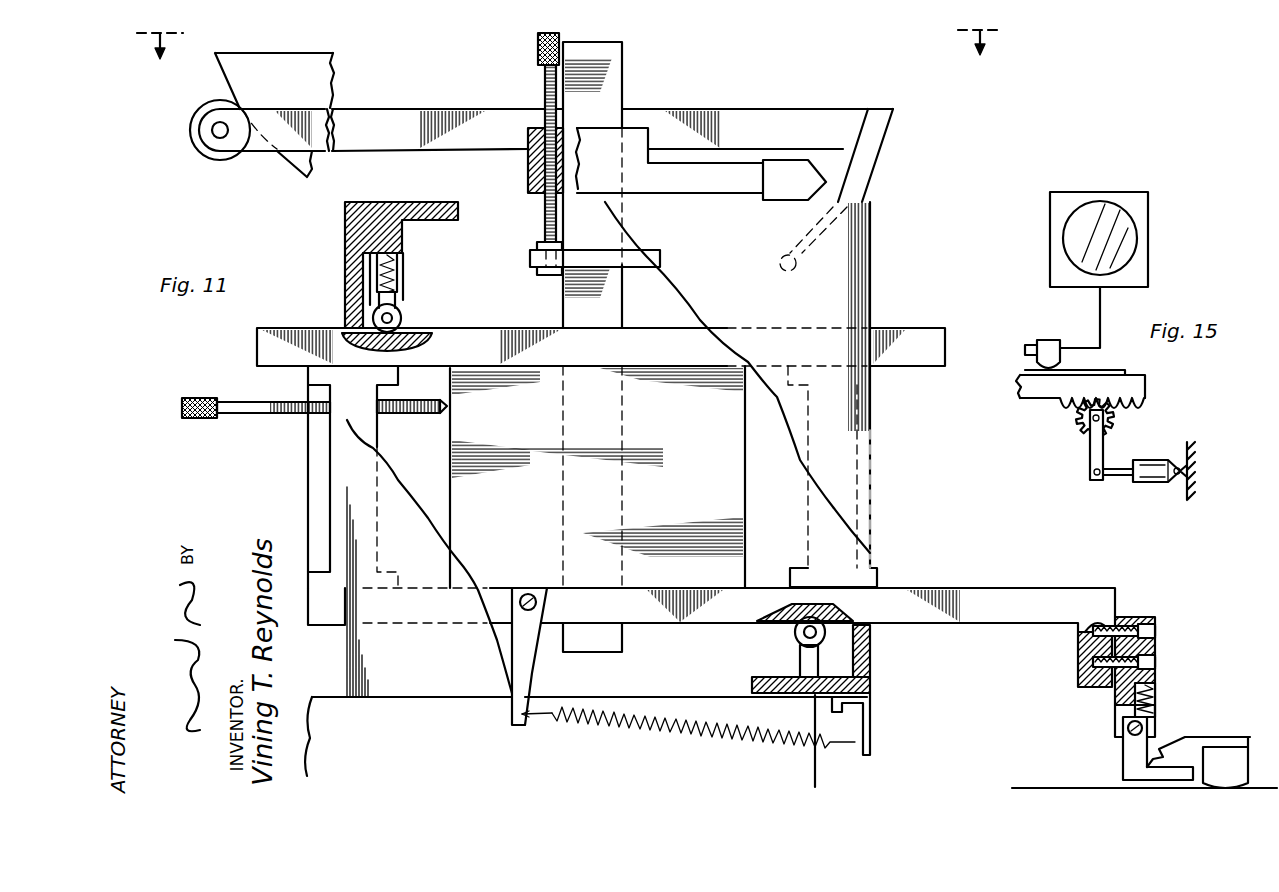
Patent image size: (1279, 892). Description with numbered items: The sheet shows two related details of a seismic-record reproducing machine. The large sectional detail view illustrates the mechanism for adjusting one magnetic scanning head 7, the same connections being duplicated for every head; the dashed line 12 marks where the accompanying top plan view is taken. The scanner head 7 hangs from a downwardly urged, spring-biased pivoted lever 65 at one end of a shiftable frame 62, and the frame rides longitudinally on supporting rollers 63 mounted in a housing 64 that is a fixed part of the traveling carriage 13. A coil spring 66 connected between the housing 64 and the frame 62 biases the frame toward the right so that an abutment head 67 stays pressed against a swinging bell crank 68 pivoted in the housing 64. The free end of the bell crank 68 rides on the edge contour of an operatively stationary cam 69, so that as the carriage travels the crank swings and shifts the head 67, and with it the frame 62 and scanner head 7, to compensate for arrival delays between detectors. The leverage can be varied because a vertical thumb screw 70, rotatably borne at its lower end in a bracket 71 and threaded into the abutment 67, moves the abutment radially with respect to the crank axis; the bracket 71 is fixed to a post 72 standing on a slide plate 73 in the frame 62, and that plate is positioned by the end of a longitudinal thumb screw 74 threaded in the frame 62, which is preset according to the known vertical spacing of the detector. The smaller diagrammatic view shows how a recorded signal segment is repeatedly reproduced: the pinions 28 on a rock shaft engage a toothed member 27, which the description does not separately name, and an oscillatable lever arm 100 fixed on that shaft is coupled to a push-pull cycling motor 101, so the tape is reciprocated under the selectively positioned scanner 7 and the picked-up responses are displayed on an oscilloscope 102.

In FIG. 11, the section line 12 is at (569, 67).
In FIG. 11, the cam 69 is at (297, 162).
In FIG. 11, the thumb screw 70 is at (545, 92).
In FIG. 11, the bracket 71 is at (530, 259).
In FIG. 11, the post 72 is at (578, 305).
In FIG. 11, the abutment head 67 is at (763, 163).
In FIG. 11, the bell crank 68 is at (858, 164).
In FIG. 11, the housing 64 is at (344, 220).
In FIG. 11, the supporting rollers 63 is at (400, 318).
In FIG. 11, the thumb screw 74 is at (248, 408).
In FIG. 11, the slide plate 73 is at (723, 460).
In FIG. 11, the shiftable frame 62 is at (970, 586).
In FIG. 11, the pivoted lever 65 is at (1128, 752).
In FIG. 11, the scanning head 7 is at (1228, 762).
In FIG. 15, the scanning head 7 is at (1040, 360).
In FIG. 11, the coil spring 66 is at (630, 727).
In FIG. 11, the traveling carriage 13 is at (330, 697).
In FIG. 15, the oscilloscope 102 is at (1148, 210).
In FIG. 15, the rack bar 27 is at (1145, 400).
In FIG. 15, the pinions 28 is at (1078, 420).
In FIG. 15, the lever arm 100 is at (1090, 448).
In FIG. 15, the push-pull cycling motor 101 is at (1148, 482).